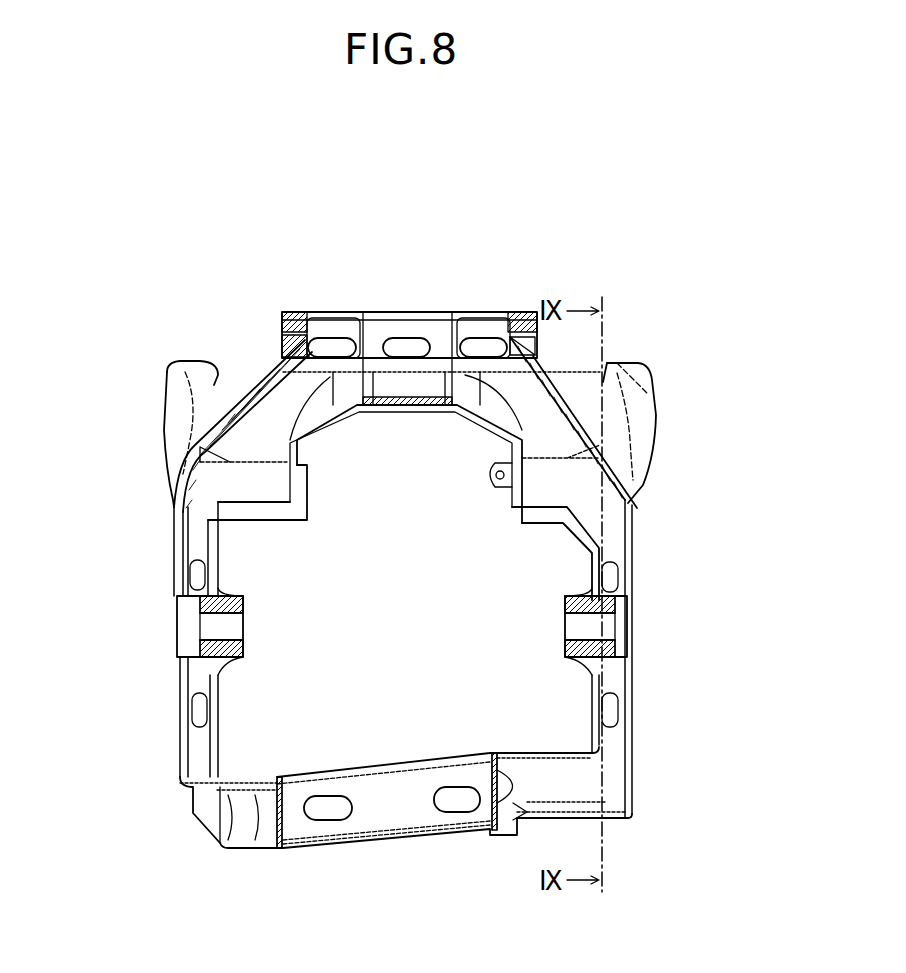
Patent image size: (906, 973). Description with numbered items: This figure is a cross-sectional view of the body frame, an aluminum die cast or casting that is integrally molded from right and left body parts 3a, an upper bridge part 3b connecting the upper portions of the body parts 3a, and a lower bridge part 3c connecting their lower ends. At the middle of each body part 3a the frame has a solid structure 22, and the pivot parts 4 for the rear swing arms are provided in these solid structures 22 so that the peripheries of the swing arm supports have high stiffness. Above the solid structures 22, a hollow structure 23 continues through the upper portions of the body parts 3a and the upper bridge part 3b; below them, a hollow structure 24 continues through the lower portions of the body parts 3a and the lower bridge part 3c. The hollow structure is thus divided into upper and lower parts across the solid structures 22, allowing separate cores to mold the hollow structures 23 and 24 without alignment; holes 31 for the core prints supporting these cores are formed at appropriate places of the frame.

The body part 3a is at (173, 522).
The upper bridge part 3b is at (405, 308).
The lower bridge part 3c is at (407, 843).
The pivot part 4 is at (232, 632).
The solid structure 22 is at (243, 596).
The hollow structure 23 is at (277, 413).
The hollow structure 24 is at (373, 810).
The hole 31 is at (177, 690).